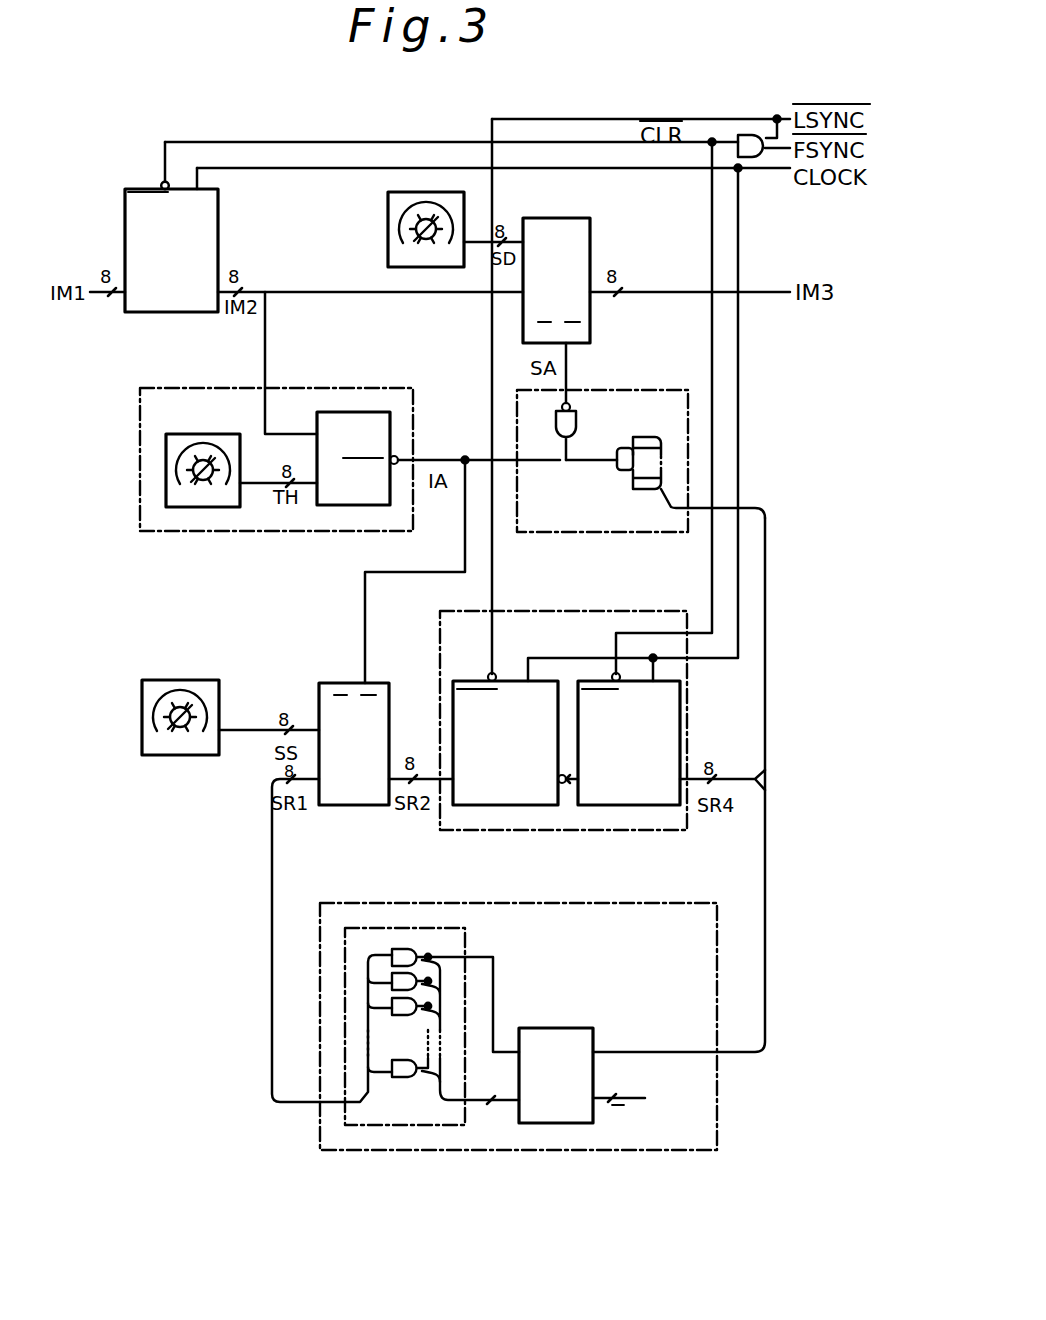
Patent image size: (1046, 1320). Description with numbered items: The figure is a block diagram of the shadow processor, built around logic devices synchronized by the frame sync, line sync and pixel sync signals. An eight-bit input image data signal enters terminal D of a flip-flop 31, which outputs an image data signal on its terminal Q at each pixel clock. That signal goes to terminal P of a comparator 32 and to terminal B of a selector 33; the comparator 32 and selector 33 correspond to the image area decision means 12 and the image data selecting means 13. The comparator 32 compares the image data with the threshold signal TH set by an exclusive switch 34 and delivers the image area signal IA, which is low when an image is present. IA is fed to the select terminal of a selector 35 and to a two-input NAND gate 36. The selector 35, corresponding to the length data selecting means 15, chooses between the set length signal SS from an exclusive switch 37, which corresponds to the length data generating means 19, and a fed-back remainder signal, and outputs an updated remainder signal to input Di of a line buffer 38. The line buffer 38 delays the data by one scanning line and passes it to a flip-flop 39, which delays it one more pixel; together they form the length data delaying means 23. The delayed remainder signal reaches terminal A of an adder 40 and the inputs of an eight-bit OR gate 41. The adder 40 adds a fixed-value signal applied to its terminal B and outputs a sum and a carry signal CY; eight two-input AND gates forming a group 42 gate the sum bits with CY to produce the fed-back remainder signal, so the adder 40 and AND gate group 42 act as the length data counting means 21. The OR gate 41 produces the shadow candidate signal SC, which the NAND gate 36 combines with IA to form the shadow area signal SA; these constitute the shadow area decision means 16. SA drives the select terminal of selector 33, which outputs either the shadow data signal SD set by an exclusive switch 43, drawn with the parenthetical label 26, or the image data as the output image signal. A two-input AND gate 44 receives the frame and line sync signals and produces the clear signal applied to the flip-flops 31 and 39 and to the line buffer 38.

The flip-flop 31 is at (125, 241).
The exclusive switch 43 is at (379, 229).
The data setting switch 26 is at (388, 246).
The selector 33 is at (609, 280).
The image data selecting means 13 is at (592, 242).
The exclusive switch 34 is at (203, 434).
The comparator 32 is at (354, 425).
The image area decision means 12 is at (350, 412).
The NAND gate 36 is at (578, 420).
The shadow area decision means 16 is at (641, 467).
The OR gate 41 is at (627, 472).
The exclusive switch 37 is at (182, 695).
The length data generating means 19 is at (182, 680).
The selector 35 is at (327, 720).
The length data selecting means 15 is at (340, 683).
The line buffer 38 is at (498, 806).
The flip-flop 39 is at (637, 806).
The length data delaying means 23 is at (580, 742).
The adder 40 is at (558, 1028).
The AND gate group 42 is at (345, 1108).
The length data counting means 21 is at (512, 1026).
The AND gate 44 is at (752, 135).